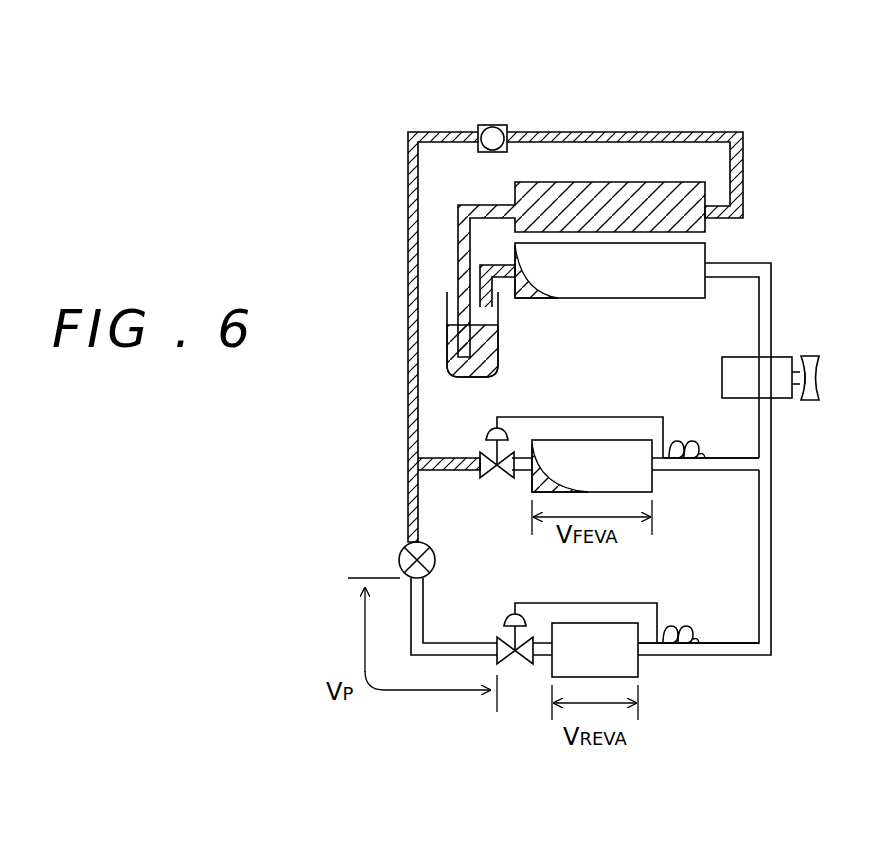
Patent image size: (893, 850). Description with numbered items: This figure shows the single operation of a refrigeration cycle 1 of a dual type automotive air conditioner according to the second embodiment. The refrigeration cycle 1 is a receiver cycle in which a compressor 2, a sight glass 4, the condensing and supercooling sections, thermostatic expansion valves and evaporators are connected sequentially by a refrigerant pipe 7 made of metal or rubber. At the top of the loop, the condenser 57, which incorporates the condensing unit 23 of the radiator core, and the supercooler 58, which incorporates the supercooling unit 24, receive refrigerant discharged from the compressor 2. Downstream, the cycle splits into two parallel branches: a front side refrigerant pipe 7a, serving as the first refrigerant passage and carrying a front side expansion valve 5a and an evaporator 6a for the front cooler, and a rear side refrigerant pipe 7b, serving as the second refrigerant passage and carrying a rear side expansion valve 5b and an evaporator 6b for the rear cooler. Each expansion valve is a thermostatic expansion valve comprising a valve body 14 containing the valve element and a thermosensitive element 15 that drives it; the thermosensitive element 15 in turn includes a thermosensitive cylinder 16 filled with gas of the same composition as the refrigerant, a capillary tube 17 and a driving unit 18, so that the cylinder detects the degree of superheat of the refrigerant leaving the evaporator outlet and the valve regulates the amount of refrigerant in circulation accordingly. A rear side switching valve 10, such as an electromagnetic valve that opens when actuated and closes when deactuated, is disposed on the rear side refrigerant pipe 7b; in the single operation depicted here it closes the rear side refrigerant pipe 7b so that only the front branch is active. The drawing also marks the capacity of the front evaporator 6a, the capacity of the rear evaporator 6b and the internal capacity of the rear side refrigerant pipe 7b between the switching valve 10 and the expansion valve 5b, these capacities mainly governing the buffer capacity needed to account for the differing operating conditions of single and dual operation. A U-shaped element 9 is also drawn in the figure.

The refrigeration cycle 1 is at (396, 116).
The compressor 2 is at (782, 362).
The sight glass 4 is at (491, 125).
The front side expansion valve 5a is at (490, 480).
The rear side expansion valve 5b is at (519, 665).
The evaporator for front cooler 6a is at (594, 455).
The evaporator for rear cooler 6b is at (587, 632).
The refrigerant pipe 7 is at (771, 263).
The front side refrigerant pipe 7a is at (706, 470).
The rear side refrigerant pipe 7b is at (713, 656).
The U-tube manometer 9 is at (446, 292).
The rear side switching valve 10 is at (403, 548).
The valve body 14 is at (486, 459).
The thermosensitive element 15 is at (527, 415).
The thermosensitive cylinder 16 is at (684, 441).
The capillary tube 17 is at (645, 417).
The driving unit 18 is at (494, 432).
The condensing unit 23 is at (618, 182).
The supercooling unit 24 is at (603, 298).
The condenser 57 is at (610, 298).
The supercooler 58 is at (581, 207).